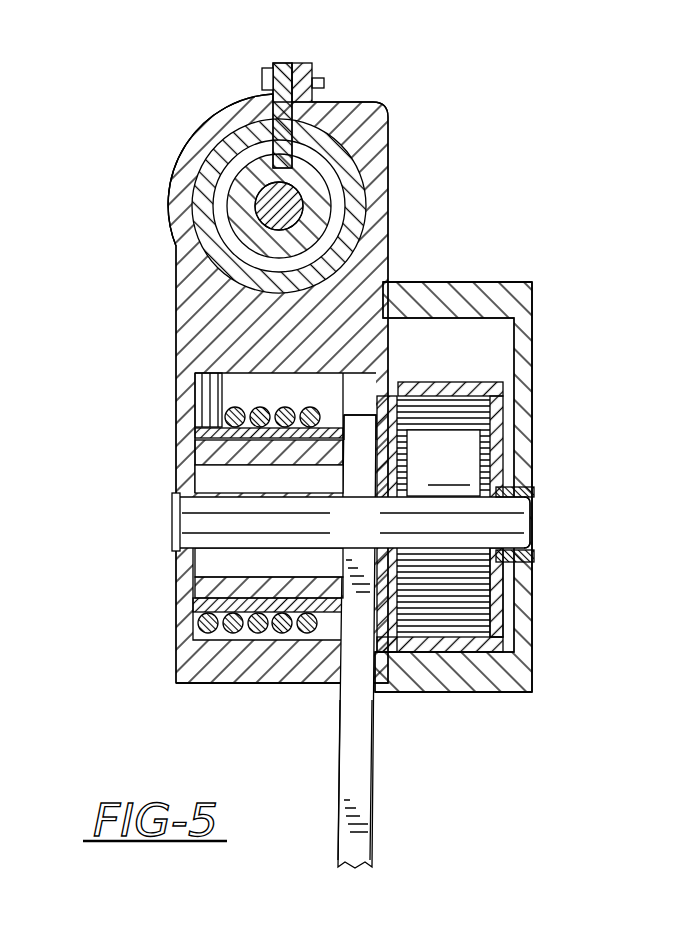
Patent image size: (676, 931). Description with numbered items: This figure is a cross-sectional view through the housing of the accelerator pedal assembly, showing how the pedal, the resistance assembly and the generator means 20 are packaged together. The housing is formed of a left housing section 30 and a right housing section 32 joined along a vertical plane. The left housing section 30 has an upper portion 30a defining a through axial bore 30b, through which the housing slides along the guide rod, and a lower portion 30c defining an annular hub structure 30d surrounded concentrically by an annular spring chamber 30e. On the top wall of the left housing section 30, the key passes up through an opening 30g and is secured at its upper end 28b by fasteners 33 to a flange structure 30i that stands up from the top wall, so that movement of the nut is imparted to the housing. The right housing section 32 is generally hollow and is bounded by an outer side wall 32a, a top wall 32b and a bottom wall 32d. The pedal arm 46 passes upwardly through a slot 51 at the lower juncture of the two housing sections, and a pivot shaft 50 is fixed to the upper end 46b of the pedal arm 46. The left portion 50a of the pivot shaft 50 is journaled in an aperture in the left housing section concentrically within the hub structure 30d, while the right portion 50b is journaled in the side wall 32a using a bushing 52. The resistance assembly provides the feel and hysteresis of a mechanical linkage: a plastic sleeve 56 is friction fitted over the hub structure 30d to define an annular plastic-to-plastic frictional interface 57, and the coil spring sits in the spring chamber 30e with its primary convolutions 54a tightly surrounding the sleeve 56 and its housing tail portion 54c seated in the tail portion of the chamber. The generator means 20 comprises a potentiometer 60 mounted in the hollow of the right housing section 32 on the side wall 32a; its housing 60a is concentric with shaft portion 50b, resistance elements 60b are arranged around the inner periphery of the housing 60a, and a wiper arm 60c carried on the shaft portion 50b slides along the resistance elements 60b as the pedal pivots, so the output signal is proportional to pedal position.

The generator means 20 is at (548, 445).
The upper end of key 28b is at (282, 63).
The left housing section 30 is at (172, 352).
The upper portion of left housing section 30a is at (167, 205).
The through axial bore 30b is at (355, 215).
The lower portion of left housing section 30c is at (167, 650).
The annular hub structure 30d is at (208, 427).
The annular spring chamber 30e is at (200, 563).
The opening 30g is at (273, 140).
The flange structure 30i is at (310, 62).
The right housing section 32 is at (526, 276).
The outer side wall 32a is at (530, 417).
The top wall 32b is at (453, 283).
The bottom wall 32d is at (510, 692).
The fasteners 33 is at (262, 80).
The pedal arm 46 is at (372, 848).
The upper end of pedal arm 46b is at (383, 380).
The pivot shaft 50 is at (244, 488).
The left portion of pivot shaft 50a is at (173, 517).
The right portion of pivot shaft 50b is at (535, 543).
The slot 51 is at (368, 680).
The bushing 52 is at (535, 500).
The primary convolutions 54a is at (258, 633).
The housing tail portion 54c is at (207, 387).
The sleeve 56 is at (333, 430).
The annular frictional interface 57 is at (247, 590).
The potentiometer 60 is at (503, 372).
The potentiometer housing 60a is at (495, 630).
The resistance elements 60b is at (505, 578).
The wiper arm 60c is at (443, 463).